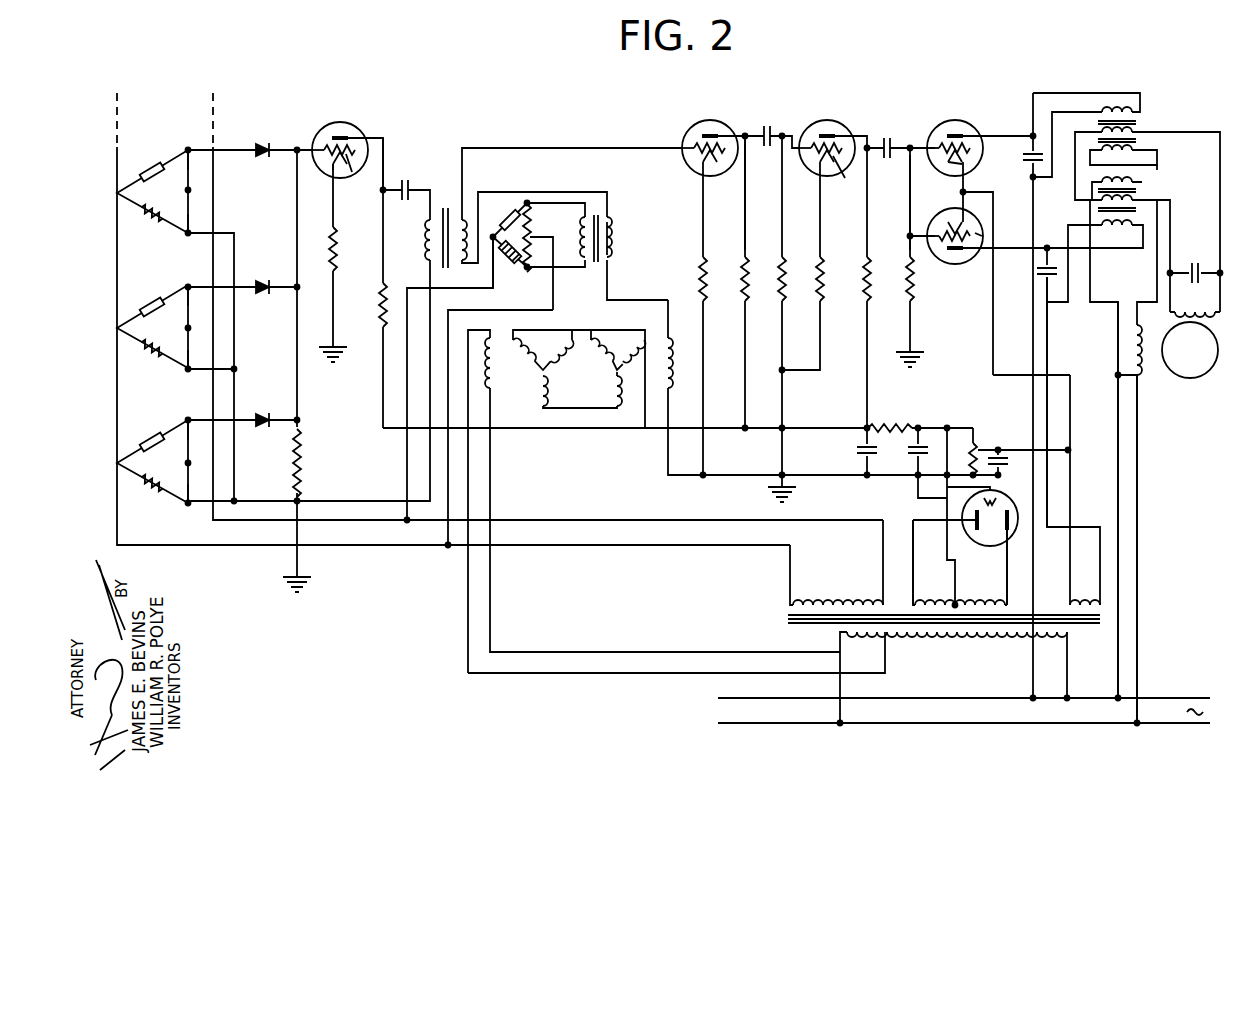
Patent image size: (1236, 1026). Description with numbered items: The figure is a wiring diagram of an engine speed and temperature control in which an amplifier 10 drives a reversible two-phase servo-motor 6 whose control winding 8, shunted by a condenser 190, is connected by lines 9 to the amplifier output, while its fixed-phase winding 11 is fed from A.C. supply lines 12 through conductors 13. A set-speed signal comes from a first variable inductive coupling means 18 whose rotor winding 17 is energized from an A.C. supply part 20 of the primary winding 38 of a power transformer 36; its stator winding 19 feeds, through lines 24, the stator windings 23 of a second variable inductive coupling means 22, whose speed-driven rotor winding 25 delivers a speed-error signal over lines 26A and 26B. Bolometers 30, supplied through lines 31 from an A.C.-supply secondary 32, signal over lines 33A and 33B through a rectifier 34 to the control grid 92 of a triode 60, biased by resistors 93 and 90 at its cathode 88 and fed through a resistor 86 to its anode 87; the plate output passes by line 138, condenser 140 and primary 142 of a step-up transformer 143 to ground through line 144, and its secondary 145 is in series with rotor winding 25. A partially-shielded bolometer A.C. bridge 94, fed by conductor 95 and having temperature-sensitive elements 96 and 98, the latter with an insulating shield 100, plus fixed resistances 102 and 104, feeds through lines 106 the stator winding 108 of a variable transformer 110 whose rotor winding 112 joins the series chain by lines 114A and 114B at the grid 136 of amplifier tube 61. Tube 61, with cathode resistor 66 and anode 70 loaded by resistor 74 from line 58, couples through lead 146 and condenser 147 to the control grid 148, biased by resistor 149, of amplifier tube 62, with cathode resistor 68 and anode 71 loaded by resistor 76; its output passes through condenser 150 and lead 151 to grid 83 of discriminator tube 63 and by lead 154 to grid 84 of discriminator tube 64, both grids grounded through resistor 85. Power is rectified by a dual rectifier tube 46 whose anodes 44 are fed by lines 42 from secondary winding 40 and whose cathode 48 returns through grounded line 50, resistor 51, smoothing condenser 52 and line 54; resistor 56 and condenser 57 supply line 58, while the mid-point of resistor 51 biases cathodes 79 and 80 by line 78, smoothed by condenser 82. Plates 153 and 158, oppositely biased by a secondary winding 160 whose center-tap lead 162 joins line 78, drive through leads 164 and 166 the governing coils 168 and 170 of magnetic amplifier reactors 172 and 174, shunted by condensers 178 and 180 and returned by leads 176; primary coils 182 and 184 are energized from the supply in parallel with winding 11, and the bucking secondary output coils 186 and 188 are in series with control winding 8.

The servo-motor 6 is at (1194, 382).
The control winding 8 is at (1193, 310).
The lines 9 is at (1218, 216).
The amplifier 10 is at (895, 92).
The fixed-phase winding 11 is at (1150, 376).
The A.C. supply lines 12 is at (1157, 723).
The conductors 13 is at (1137, 478).
The rotor winding 17 is at (490, 370).
The first variable inductive coupling means 18 is at (503, 338).
The stator winding 19 is at (550, 372).
The A.C. supply part 20 is at (876, 640).
The second variable inductive coupling means 22 is at (630, 386).
The stator windings 23 is at (622, 368).
The lines 24 is at (565, 335).
The rotor winding 25 is at (674, 368).
The line 26A is at (668, 335).
The line 26B is at (668, 462).
The bolometer 30 is at (152, 165).
The lines 31 is at (243, 547).
The A.C.-supply secondary 32 is at (836, 597).
The line 33A is at (298, 148).
The line 33B is at (236, 248).
The rectifier 34 is at (260, 142).
The power transformer 36 is at (782, 617).
The primary winding 38 is at (947, 643).
The secondary winding 40 is at (966, 596).
The lines 42 is at (910, 548).
The anodes 44 is at (962, 518).
The dual rectifier tube 46 is at (995, 548).
The cathode 48 is at (992, 536).
The grounded line 50 is at (902, 487).
The resistor 51 is at (978, 445).
The D.C. smoothing condenser 52 is at (908, 453).
The line 54 is at (952, 427).
The resistor 56 is at (894, 425).
The condenser 57 is at (855, 450).
The line 58 is at (804, 428).
The triode 60 is at (348, 120).
The amplifier tube 61 is at (700, 119).
The amplifier tube 62 is at (827, 119).
The discriminator tube 63 is at (962, 118).
The discriminator tube 64 is at (925, 240).
The resistor 66 is at (706, 282).
The resistor 68 is at (822, 282).
The anode 70 is at (717, 134).
The anode 71 is at (836, 134).
The resistor 74 is at (748, 282).
The resistor 76 is at (870, 282).
The line 78 is at (1072, 403).
The cathode 79 is at (940, 160).
The cathode 80 is at (946, 222).
The condenser 82 is at (999, 456).
The grid 83 is at (975, 163).
The grid 84 is at (982, 231).
The resistor 85 is at (912, 282).
The resistor 86 is at (380, 300).
The anode 87 is at (358, 135).
The cathode 88 is at (333, 170).
The resistor 90 is at (338, 262).
The control grid 92 is at (361, 178).
The resistor 93 is at (302, 460).
The bolometer A.C. bridge 94 is at (516, 284).
The conductor 95 is at (460, 310).
The temperature-sensitive resistance element 96 is at (507, 217).
The temperature-sensitive resistance element 98 is at (508, 260).
The insulating shield 100 is at (498, 258).
The fixed resistance 102 is at (533, 212).
The fixed resistance 104 is at (556, 248).
The lines 106 is at (565, 203).
The stator winding 108 is at (610, 222).
The variable transformer 110 is at (628, 268).
The rotor winding 112 is at (612, 243).
The line 114A is at (607, 300).
The line 114B is at (520, 192).
The grid 136 is at (690, 142).
The line 138 is at (386, 152).
The condenser 140 is at (407, 180).
The primary 142 is at (428, 245).
The step-up transformer 143 is at (445, 205).
The line 144 is at (345, 500).
The secondary 145 is at (465, 218).
The lead 146 is at (752, 142).
The condenser 147 is at (770, 126).
The control grid 148 is at (848, 183).
The resistor 149 is at (784, 282).
The condenser 150 is at (889, 130).
The lead 151 is at (898, 155).
The plate 153 is at (970, 134).
The lead 154 is at (908, 212).
The plate 158 is at (958, 256).
The secondary winding 160 is at (1067, 596).
The lead 162 is at (1071, 487).
The lead 164 is at (1070, 92).
The lead 166 is at (994, 258).
The governing coil 168 is at (1120, 108).
The governing coil 170 is at (1110, 228).
The magnetic amplifier reactor 172 is at (1142, 142).
The magnetic amplifier reactor 174 is at (1082, 216).
The leads 176 is at (1045, 350).
The condenser 178 is at (1025, 156).
The condenser 180 is at (1040, 275).
The primary coil 182 is at (1136, 153).
The primary coil 184 is at (1136, 182).
The secondary output coil 186 is at (1136, 129).
The secondary output coil 188 is at (1136, 200).
The condenser 190 is at (1194, 262).